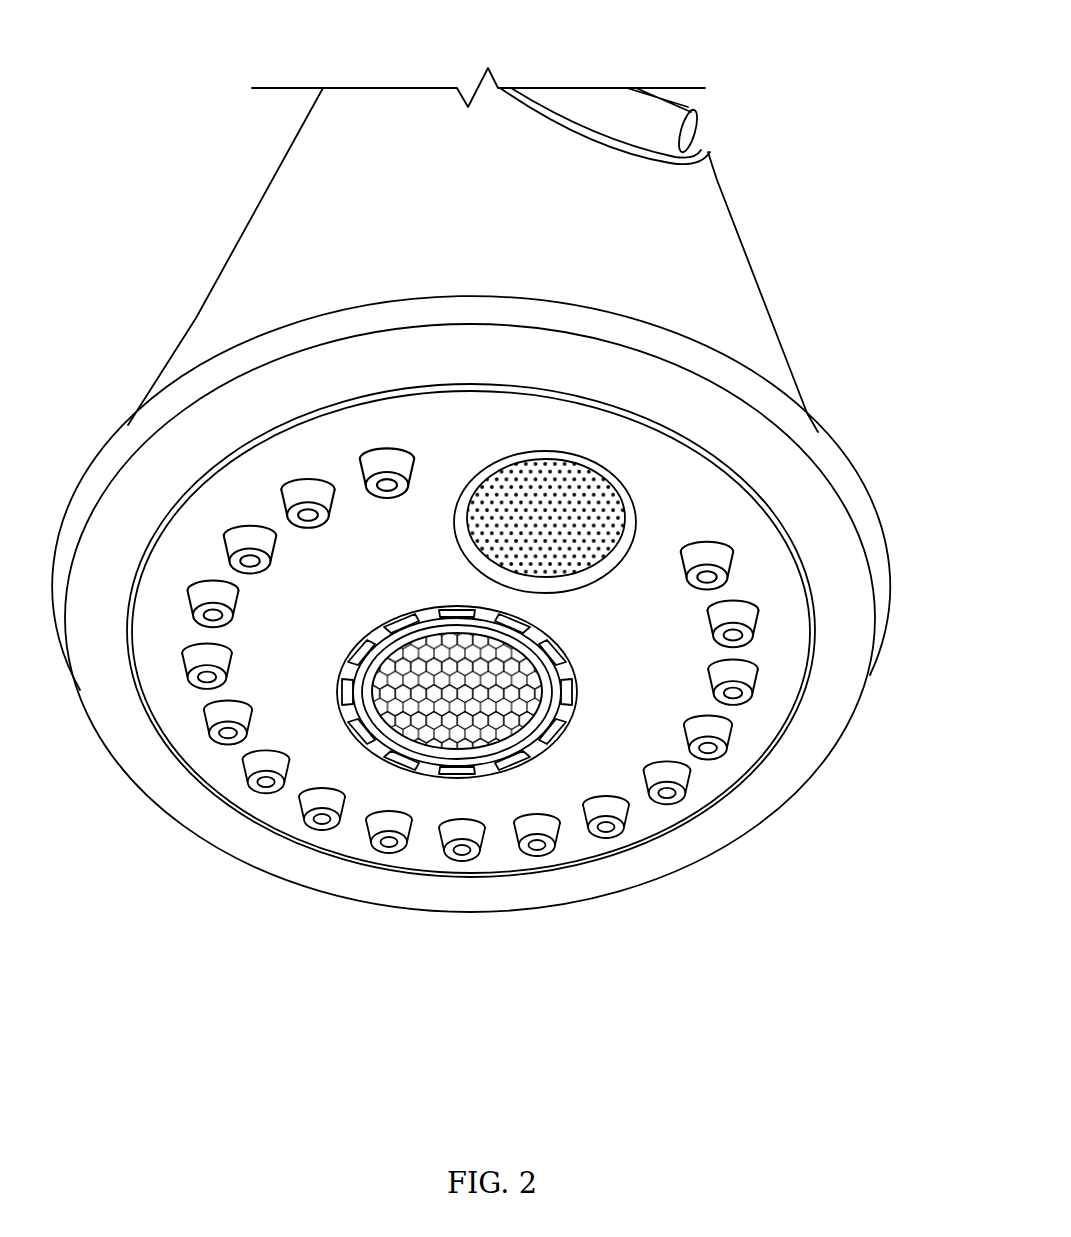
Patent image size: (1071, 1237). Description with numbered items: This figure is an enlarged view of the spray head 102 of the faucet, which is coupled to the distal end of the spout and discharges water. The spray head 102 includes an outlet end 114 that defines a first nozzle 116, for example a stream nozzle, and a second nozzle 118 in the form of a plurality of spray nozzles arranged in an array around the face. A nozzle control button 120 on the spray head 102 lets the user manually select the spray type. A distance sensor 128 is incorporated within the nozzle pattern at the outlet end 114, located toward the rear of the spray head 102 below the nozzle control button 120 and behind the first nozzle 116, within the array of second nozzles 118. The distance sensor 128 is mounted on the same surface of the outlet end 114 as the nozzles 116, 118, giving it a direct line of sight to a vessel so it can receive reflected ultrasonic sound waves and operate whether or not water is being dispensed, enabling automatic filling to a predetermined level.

The spray head 102 is at (170, 100).
The outlet end 114 is at (270, 866).
The first nozzle 116 is at (496, 763).
The second nozzle 118 is at (667, 793).
The nozzle control button 120 is at (690, 109).
The distance sensor 128 is at (610, 500).